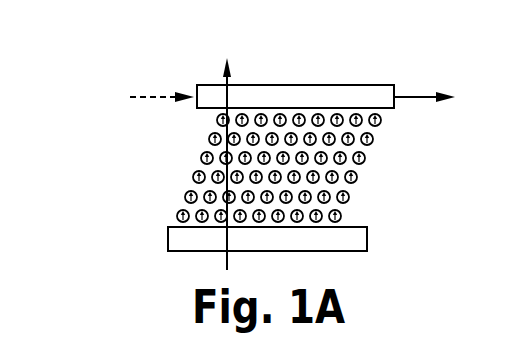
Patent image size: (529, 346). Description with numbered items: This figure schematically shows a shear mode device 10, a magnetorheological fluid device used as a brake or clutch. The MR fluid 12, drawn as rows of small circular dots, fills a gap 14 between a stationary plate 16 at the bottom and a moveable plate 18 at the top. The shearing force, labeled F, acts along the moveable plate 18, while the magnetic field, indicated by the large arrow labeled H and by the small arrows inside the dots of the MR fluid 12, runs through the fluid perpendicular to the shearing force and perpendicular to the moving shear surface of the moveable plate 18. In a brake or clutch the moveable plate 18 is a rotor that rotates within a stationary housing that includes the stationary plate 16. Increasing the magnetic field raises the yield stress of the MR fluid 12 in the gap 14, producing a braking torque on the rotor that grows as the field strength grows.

The shear mode device 10 is at (166, 46).
The MR fluid 12 is at (275, 167).
The gap 14 is at (106, 190).
The stationary plate 16 is at (185, 240).
The moveable plate 18 is at (288, 98).